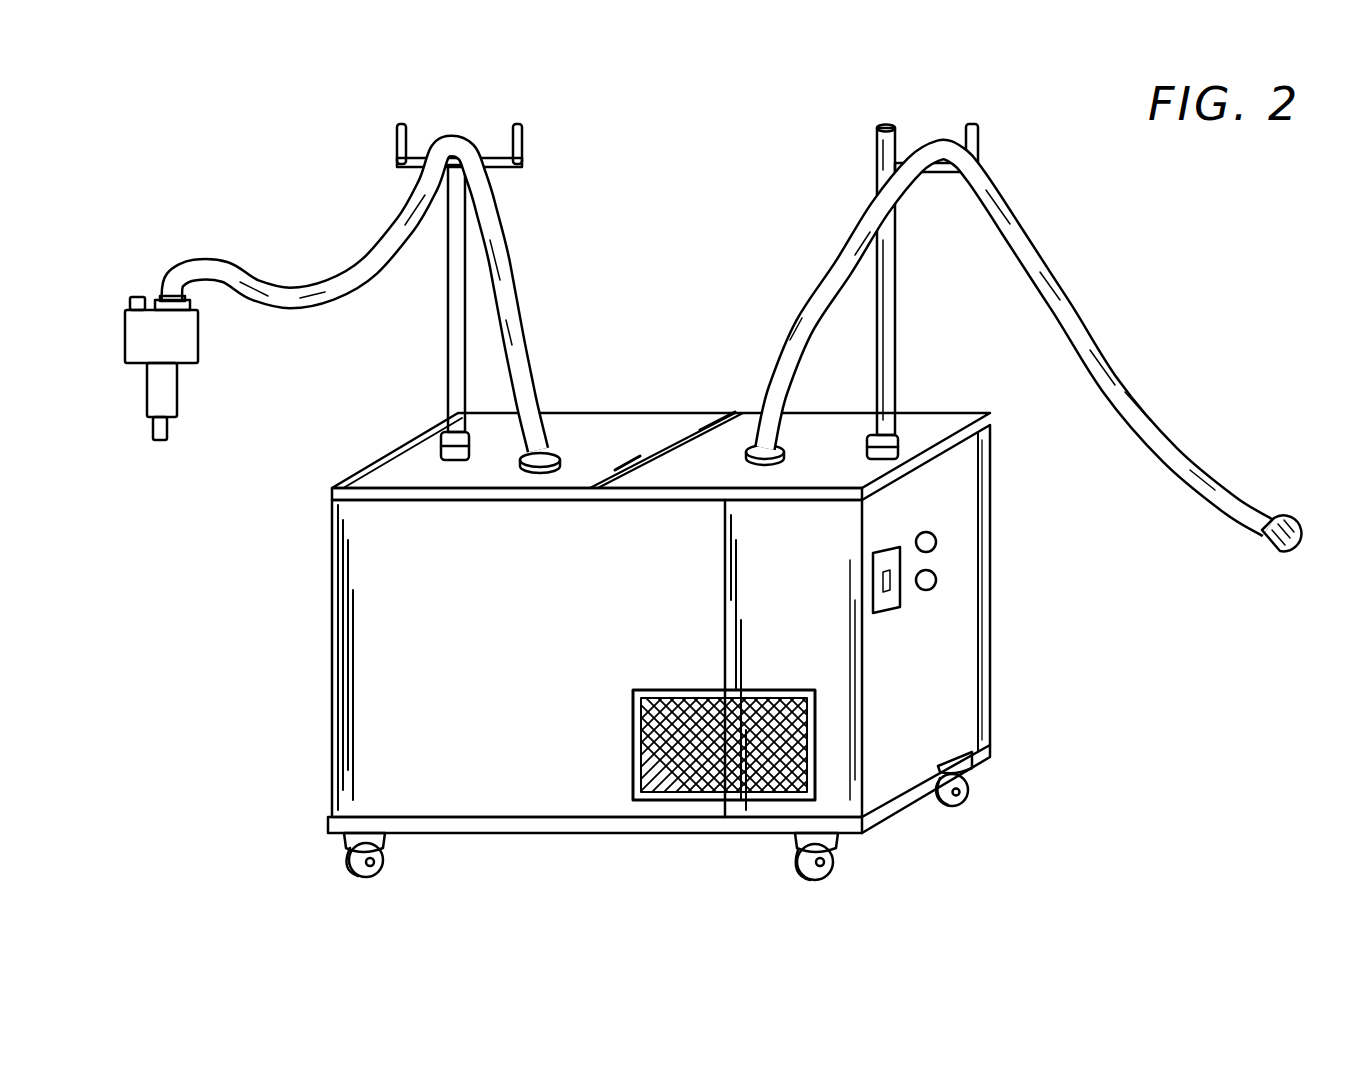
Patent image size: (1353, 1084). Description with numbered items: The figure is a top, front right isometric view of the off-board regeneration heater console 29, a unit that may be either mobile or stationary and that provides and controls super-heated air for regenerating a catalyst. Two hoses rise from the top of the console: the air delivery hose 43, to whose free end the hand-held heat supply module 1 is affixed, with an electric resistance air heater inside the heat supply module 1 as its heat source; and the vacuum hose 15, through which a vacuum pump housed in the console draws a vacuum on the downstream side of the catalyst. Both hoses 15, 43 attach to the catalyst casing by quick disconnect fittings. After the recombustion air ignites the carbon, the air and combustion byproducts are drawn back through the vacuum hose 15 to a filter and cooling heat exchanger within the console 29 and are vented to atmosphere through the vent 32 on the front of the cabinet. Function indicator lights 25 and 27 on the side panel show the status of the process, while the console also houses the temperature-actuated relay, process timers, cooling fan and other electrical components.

The heat supply module 1 is at (132, 333).
The vacuum hose 15 is at (1082, 325).
The function indicator light 25 is at (936, 540).
The function indicator light 27 is at (936, 580).
The regeneration heater console 29 is at (973, 687).
The vent 32 is at (673, 783).
The air delivery hose 43 is at (362, 256).